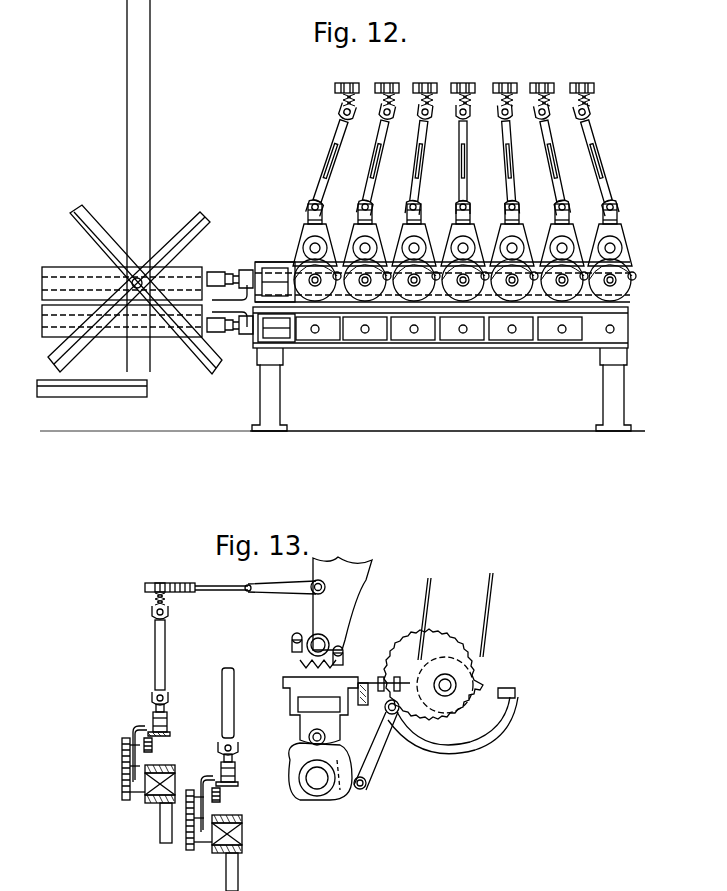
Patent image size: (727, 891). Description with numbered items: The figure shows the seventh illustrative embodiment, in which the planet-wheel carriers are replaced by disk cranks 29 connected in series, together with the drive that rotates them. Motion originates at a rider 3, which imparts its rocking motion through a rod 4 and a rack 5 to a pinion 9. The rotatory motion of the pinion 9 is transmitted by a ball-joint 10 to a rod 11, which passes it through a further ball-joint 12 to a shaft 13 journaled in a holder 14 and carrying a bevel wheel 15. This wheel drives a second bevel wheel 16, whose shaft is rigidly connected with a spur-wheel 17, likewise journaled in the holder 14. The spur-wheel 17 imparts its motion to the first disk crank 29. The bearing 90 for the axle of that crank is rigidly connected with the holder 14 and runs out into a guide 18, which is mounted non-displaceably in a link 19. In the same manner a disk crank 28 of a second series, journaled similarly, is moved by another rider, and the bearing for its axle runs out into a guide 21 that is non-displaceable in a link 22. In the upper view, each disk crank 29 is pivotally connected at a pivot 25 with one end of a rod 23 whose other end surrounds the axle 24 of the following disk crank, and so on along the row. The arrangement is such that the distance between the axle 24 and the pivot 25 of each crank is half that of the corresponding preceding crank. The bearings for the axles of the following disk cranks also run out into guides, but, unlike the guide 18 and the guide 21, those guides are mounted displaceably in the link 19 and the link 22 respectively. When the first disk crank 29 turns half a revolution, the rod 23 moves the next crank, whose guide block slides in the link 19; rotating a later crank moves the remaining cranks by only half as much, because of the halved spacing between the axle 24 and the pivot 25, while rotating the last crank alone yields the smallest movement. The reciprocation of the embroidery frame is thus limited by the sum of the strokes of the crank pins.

In FIG. 13, the rider 3 is at (400, 678).
In FIG. 13, the rod 4 is at (284, 592).
In FIG. 12, the rack 5 is at (421, 86).
In FIG. 13, the rack 5 is at (184, 583).
In FIG. 12, the pinion 9 is at (462, 86).
In FIG. 13, the pinion 9 is at (159, 583).
In FIG. 12, the ball-joint 10 is at (420, 113).
In FIG. 13, the ball-joint 10 is at (166, 614).
In FIG. 12, the rod 11 is at (331, 148).
In FIG. 13, the rod 11 is at (164, 660).
In FIG. 12, the ball-joint 12 is at (420, 210).
In FIG. 13, the ball-joint 12 is at (165, 702).
In FIG. 12, the shaft 13 is at (310, 225).
In FIG. 13, the shaft 13 is at (156, 720).
In FIG. 13, the holder 14 is at (132, 729).
In FIG. 12, the bevel wheel 15 is at (617, 234).
In FIG. 13, the bevel wheel 15 is at (167, 735).
In FIG. 13, the bevel wheel 16 is at (153, 752).
In FIG. 12, the spur-wheel 17 is at (620, 250).
In FIG. 13, the spur-wheel 17 is at (122, 748).
In FIG. 12, the guide 18 is at (345, 300).
In FIG. 13, the guide 18 is at (176, 782).
In FIG. 12, the link 19 is at (590, 348).
In FIG. 13, the link 19 is at (160, 803).
In FIG. 12, the guide 21 is at (382, 340).
In FIG. 13, the guide 21 is at (243, 834).
In FIG. 12, the link 22 is at (420, 340).
In FIG. 13, the link 22 is at (238, 855).
In FIG. 12, the rod 23 is at (530, 262).
In FIG. 12, the axle 24 is at (510, 300).
In FIG. 12, the pivot 25 is at (576, 266).
In FIG. 13, the disk crank 28 is at (190, 850).
In FIG. 12, the disk crank 29 is at (296, 268).
In FIG. 13, the disk crank 29 is at (124, 798).
In FIG. 13, the bearing 90 is at (130, 780).